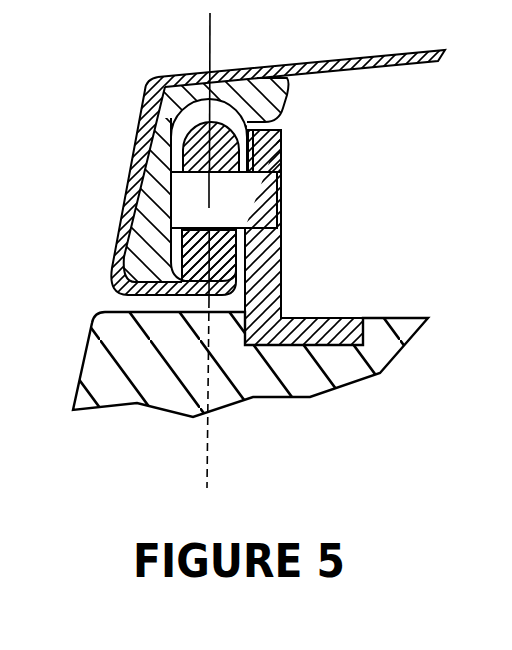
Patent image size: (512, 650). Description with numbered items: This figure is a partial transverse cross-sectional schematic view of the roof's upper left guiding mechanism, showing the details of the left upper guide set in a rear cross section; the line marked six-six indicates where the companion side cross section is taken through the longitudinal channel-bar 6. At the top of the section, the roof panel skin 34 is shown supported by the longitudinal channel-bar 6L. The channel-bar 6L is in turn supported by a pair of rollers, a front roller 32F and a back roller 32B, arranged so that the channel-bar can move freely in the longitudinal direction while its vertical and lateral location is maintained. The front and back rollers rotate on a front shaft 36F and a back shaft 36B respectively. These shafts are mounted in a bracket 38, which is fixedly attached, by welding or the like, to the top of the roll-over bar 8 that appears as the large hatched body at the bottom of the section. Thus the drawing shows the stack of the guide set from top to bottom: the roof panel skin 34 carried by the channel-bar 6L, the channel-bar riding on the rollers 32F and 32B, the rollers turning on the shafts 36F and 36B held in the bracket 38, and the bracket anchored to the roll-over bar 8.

The longitudinal channel-bar 6 is at (210, 13).
The longitudinal channel-bar 6L is at (132, 212).
The roof panel skin 34 is at (324, 63).
The front roller 32F is at (150, 97).
The back roller 32B is at (138, 130).
The front shaft 36F is at (279, 147).
The back shaft 36B is at (261, 201).
The bracket 38 is at (263, 287).
The roll-over bar 8 is at (393, 316).